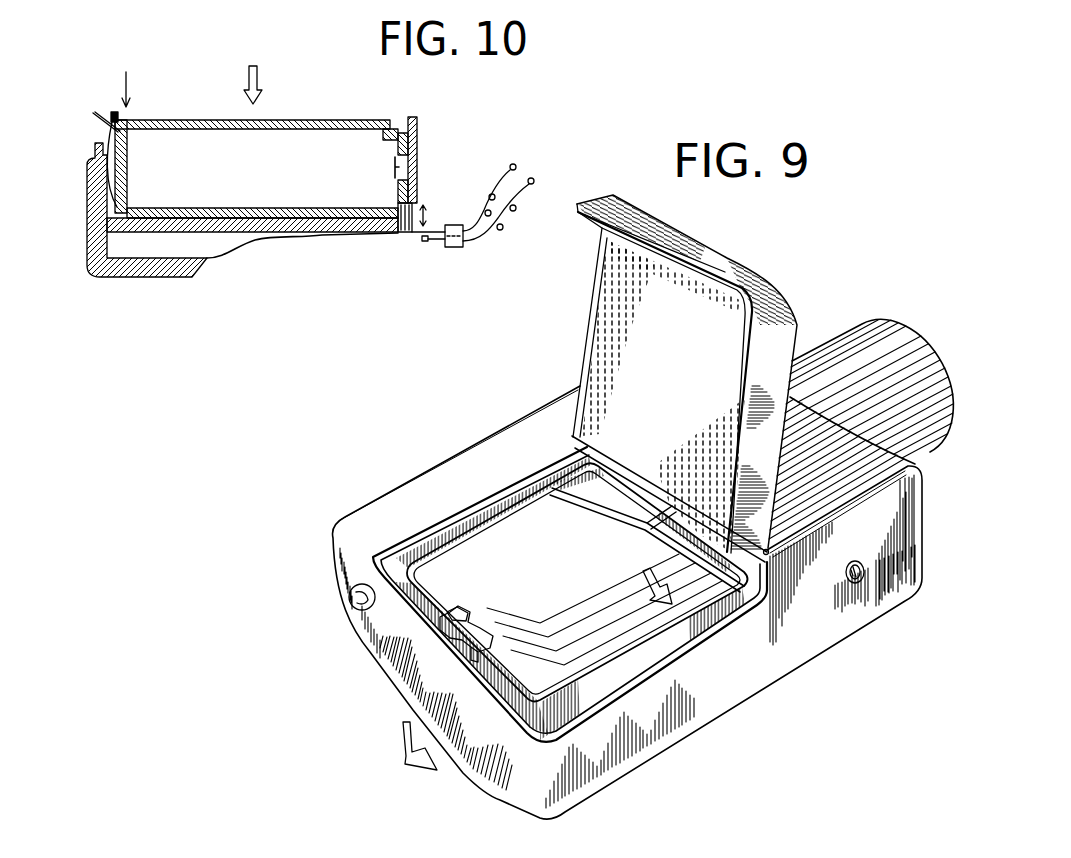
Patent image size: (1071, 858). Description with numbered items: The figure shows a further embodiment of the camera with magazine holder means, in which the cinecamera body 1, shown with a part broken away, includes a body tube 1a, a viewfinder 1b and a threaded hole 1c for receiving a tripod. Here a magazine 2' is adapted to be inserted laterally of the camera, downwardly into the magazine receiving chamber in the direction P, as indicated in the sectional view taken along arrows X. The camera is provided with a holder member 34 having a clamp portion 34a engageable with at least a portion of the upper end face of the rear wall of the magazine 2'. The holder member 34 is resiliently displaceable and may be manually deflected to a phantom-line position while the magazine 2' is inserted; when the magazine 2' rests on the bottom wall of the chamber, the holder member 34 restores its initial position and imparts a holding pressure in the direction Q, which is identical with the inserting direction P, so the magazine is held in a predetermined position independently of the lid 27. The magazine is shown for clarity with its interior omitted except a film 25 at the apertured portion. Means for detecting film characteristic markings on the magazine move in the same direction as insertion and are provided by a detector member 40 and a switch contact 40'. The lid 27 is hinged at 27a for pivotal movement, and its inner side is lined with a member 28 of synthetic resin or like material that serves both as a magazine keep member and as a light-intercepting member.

In FIG. 10, the cinecamera body 1 is at (252, 197).
In FIG. 9, the cinecamera body 1 is at (628, 602).
In FIG. 9, the body tube 1a is at (902, 327).
In FIG. 9, the viewfinder 1b is at (349, 597).
In FIG. 9, the threaded hole 1c is at (857, 562).
In FIG. 10, the magazine 2' is at (261, 144).
In FIG. 9, the magazine 2' is at (577, 582).
In FIG. 10, the film 25 is at (394, 167).
In FIG. 9, the lid 27 is at (723, 258).
In FIG. 9, the hinge 27a is at (587, 444).
In FIG. 9, the member of synthetic resin 28 is at (605, 281).
In FIG. 10, the holder member 34 is at (99, 129).
In FIG. 9, the holder member 34 is at (462, 636).
In FIG. 10, the clamp portion 34a is at (130, 121).
In FIG. 9, the clamp portion 34a is at (465, 630).
In FIG. 10, the detector member 40 is at (438, 212).
In FIG. 10, the switch contact 40' is at (418, 256).
In FIG. 10, the magazine inserting direction P is at (253, 71).
In FIG. 10, the holding pressure direction Q is at (124, 78).
In FIG. 9, the section arrows X is at (639, 577).